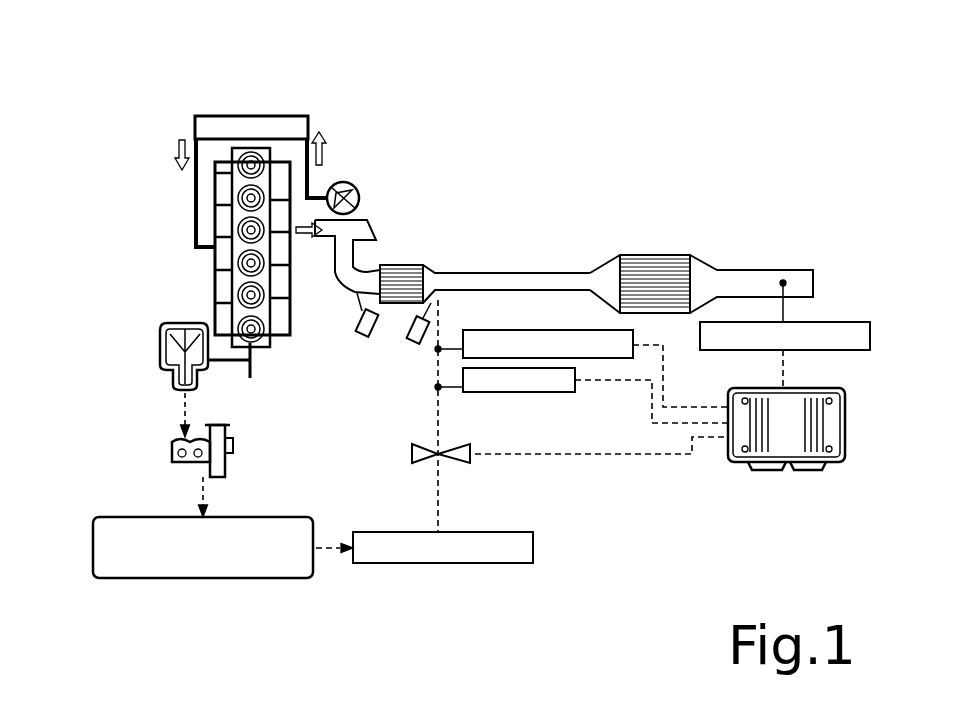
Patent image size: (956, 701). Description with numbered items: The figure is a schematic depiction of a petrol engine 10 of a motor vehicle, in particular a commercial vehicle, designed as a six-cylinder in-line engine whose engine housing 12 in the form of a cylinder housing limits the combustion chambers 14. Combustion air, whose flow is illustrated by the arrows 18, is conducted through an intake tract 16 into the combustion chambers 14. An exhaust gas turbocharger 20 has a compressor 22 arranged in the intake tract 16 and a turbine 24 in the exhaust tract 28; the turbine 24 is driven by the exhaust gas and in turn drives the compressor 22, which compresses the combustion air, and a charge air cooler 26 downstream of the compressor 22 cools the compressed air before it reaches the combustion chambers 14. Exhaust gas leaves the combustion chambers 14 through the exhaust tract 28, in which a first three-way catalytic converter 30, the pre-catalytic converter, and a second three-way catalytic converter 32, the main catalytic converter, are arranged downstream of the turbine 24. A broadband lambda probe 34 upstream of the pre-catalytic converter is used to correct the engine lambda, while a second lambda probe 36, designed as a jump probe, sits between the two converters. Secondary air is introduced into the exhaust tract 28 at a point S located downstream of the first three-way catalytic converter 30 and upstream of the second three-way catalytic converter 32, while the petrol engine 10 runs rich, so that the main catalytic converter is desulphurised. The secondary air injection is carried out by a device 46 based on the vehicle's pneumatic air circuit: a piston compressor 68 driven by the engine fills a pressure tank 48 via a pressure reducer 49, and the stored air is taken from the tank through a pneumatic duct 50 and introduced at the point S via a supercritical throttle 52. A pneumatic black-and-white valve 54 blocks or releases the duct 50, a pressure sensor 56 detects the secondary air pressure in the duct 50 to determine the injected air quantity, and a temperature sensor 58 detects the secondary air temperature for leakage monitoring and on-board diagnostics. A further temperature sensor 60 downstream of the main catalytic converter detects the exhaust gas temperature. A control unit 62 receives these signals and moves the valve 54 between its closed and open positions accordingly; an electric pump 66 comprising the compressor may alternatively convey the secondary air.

The petrol engine 10 is at (118, 127).
The engine housing 12 is at (270, 343).
The combustion chambers 14 is at (223, 205).
The intake tract 16 is at (364, 166).
The arrows 18 is at (183, 138).
The exhaust gas turbocharger 20 is at (341, 310).
The compressor 22 is at (359, 192).
The turbine 24 is at (368, 222).
The charge air cooler 26 is at (230, 118).
The exhaust tract 28 is at (312, 328).
The first three-way catalytic converter 30 is at (402, 264).
The second three-way catalytic converter 32 is at (672, 254).
The lambda probe 34 is at (368, 338).
The second lambda probe 36 is at (423, 452).
The device 46 is at (144, 610).
The pressure tank 48 is at (257, 579).
The pressure reducer 49 is at (172, 448).
The pneumatic duct 50 is at (510, 553).
The supercritical throttle 52 is at (441, 300).
The valve 54 is at (452, 462).
The pressure sensor 56 is at (510, 393).
The temperature sensor 58 is at (633, 337).
The further temperature sensor 60 is at (855, 338).
The control unit 62 is at (832, 426).
The electric pump 66 is at (122, 329).
The piston compressor 68 is at (162, 338).
The point S is at (466, 272).